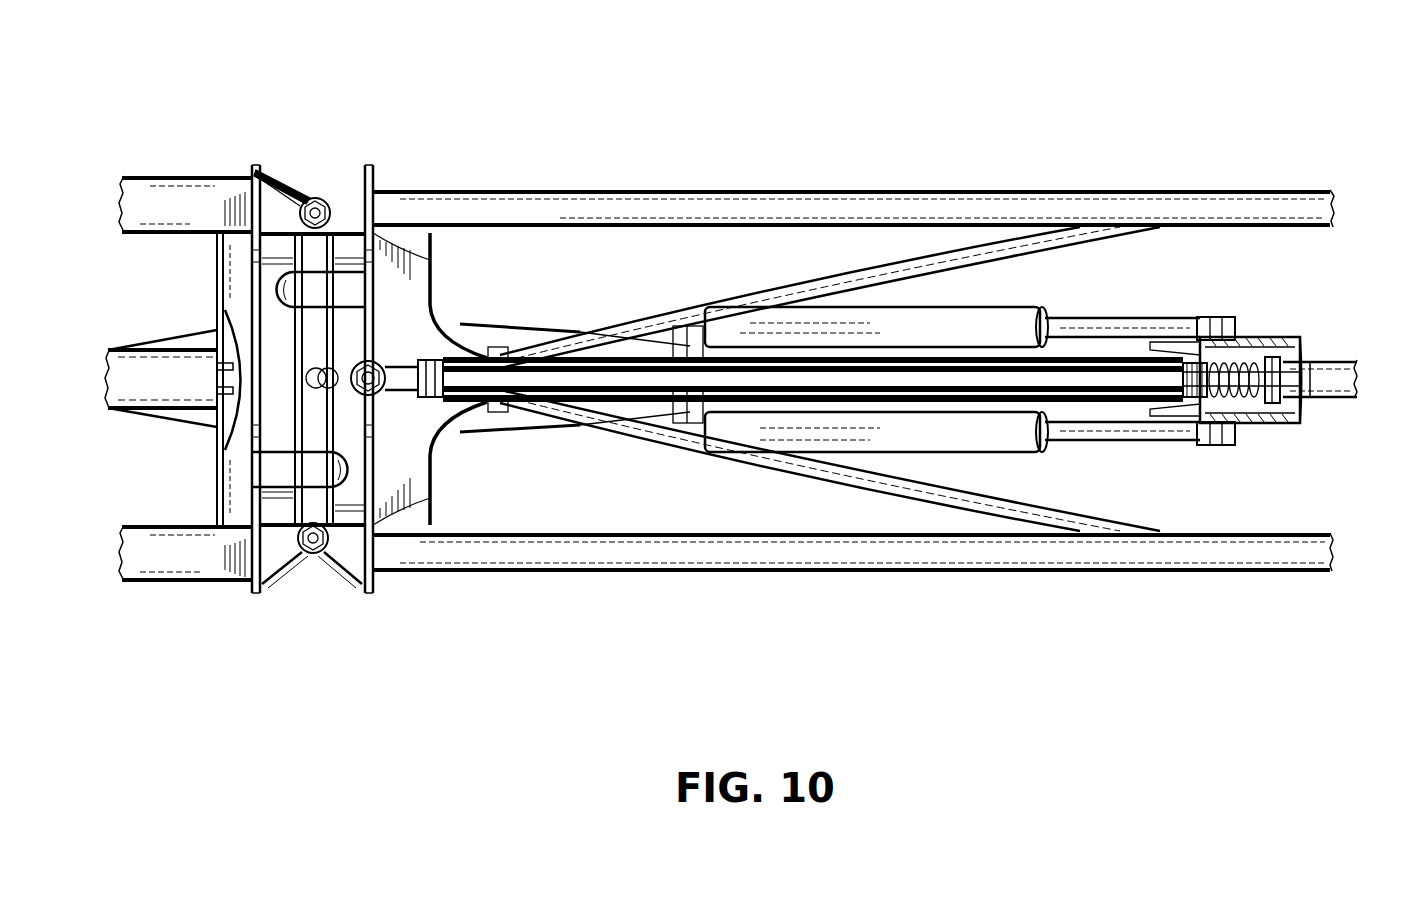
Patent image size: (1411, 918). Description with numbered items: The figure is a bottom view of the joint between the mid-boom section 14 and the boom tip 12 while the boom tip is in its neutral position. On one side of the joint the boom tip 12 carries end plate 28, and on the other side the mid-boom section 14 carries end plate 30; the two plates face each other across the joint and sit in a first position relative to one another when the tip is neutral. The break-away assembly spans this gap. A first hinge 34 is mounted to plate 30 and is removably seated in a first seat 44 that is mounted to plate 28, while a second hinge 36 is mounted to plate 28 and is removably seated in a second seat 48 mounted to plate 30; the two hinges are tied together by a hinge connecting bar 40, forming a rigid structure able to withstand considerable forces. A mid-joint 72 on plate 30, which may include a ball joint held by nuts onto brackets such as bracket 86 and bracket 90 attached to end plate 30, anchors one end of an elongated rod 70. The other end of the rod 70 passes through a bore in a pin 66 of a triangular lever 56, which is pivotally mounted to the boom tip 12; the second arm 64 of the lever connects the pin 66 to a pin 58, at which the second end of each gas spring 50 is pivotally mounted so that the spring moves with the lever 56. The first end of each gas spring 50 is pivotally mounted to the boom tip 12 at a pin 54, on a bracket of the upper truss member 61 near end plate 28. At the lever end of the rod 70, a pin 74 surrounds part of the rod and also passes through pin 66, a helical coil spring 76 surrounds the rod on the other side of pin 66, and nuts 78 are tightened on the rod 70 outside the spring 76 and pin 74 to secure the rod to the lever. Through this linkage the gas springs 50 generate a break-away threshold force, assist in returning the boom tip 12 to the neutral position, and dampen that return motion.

The boom tip 12 is at (872, 560).
The mid-boom section 14 is at (153, 560).
The end plate 28 is at (375, 573).
The end plate 30 is at (263, 553).
The first hinge 34 is at (318, 200).
The second hinge 36 is at (313, 555).
The hinge connecting bar 40 is at (312, 338).
The first seat 44 is at (343, 283).
The second seat 48 is at (287, 487).
The gas spring 50 is at (1002, 423).
The pin 54 is at (622, 348).
The lever 56 is at (1285, 327).
The pin 58 is at (1223, 318).
The upper truss member 61 is at (1345, 355).
The second arm 64 is at (1228, 347).
The pin 66 is at (1270, 387).
The rod 70 is at (1105, 380).
The mid-joint 72 is at (383, 368).
The pin 74 is at (1303, 392).
The spring 76 is at (1200, 405).
The nuts 78 is at (1182, 368).
The bracket 86 is at (268, 192).
The bracket 90 is at (273, 418).